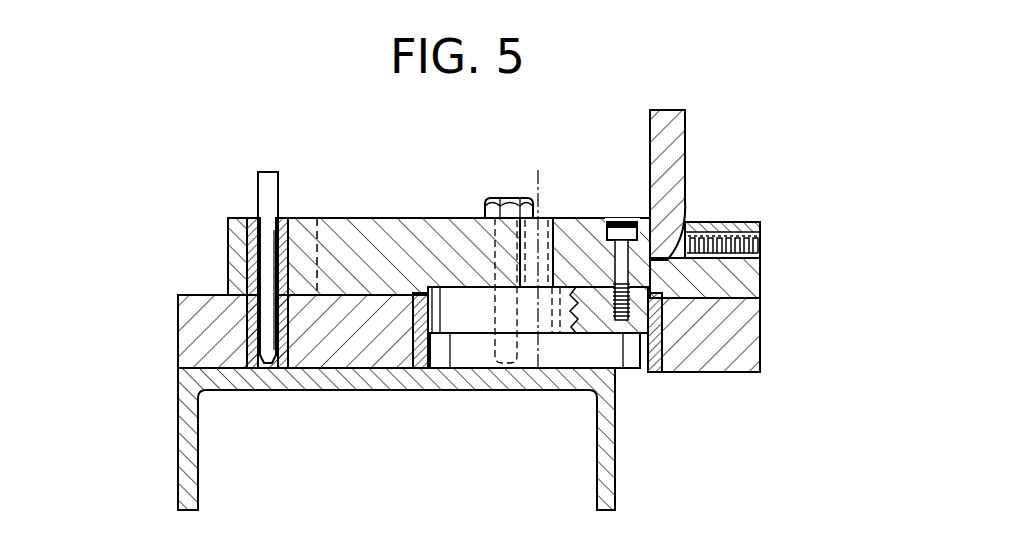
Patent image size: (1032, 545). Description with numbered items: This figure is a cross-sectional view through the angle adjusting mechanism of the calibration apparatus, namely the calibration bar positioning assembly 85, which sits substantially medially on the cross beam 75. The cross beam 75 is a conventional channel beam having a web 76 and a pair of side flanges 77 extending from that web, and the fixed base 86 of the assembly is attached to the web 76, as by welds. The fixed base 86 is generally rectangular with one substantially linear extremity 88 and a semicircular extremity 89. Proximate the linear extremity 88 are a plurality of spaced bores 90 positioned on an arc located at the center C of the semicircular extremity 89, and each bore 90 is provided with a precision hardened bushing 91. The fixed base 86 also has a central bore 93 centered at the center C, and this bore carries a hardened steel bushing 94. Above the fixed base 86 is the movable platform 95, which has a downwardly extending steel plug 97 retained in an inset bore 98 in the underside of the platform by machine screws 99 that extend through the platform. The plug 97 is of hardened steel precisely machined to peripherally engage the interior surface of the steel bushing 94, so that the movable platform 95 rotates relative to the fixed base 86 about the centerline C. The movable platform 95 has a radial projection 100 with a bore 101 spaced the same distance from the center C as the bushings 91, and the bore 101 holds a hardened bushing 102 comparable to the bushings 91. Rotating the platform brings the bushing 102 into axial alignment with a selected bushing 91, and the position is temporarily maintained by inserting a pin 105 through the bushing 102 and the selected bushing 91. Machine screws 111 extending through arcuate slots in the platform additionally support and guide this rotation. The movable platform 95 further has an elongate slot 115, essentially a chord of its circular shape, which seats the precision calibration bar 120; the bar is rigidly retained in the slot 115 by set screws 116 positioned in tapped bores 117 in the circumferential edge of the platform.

The cross beam 75 is at (177, 430).
The web 76 is at (335, 378).
The side flanges 77 is at (180, 480).
The calibration bar positioning assembly 85 is at (352, 200).
The fixed base 86 is at (202, 328).
The linear extremity 88 is at (177, 352).
The semicircular extremity 89 is at (762, 344).
The spaced bores 90 is at (248, 308).
The precision hardened bushing 91 is at (254, 370).
The central bore 93 is at (421, 374).
The hardened steel bushing 94 is at (653, 372).
The movable platform 95 is at (382, 218).
The steel plug 97 is at (587, 338).
The inset bore 98 is at (455, 225).
The machine screws 99 is at (622, 221).
The radial projection 100 is at (230, 247).
The bore 101 is at (273, 217).
The hardened bushing 102 is at (240, 262).
The pin 105 is at (268, 178).
The machine screws 111 is at (508, 200).
The elongate slot 115 is at (667, 258).
The set screws 116 is at (714, 229).
The tapped bores 117 is at (762, 243).
The calibration bar 120 is at (667, 118).
The center C is at (540, 185).